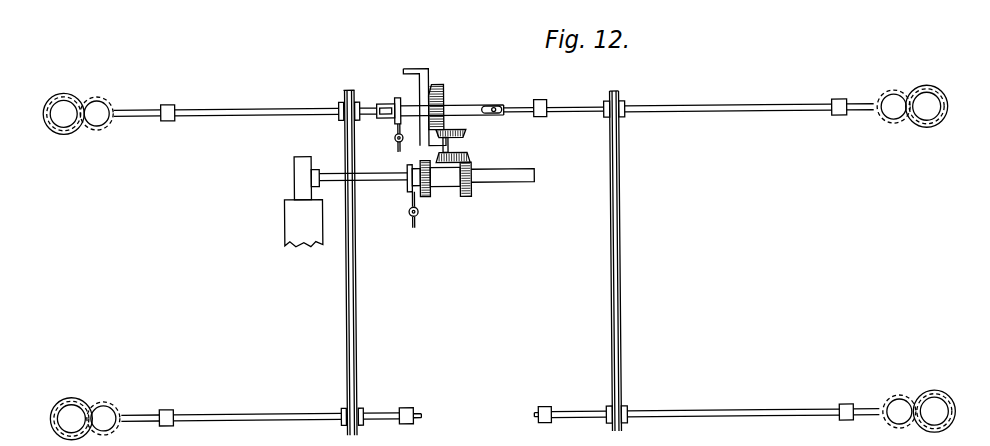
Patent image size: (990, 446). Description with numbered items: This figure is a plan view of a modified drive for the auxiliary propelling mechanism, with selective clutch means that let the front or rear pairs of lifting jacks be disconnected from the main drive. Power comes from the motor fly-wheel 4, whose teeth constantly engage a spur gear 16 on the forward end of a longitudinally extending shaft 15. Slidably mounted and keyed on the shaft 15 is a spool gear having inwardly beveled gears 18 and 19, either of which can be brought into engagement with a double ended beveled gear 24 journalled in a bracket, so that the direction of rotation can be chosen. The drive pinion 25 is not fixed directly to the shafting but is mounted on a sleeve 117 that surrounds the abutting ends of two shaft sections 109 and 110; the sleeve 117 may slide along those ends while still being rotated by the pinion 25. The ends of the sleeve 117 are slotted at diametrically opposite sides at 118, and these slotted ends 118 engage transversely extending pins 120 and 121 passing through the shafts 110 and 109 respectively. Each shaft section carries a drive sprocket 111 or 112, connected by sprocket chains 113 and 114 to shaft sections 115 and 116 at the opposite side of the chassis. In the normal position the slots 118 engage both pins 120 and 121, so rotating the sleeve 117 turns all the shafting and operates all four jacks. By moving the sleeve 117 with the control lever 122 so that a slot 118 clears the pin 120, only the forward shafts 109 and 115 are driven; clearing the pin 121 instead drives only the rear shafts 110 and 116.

The fly-wheel 4 is at (290, 215).
The longitudinally extending shaft 15 is at (527, 180).
The spur gear 16 is at (300, 174).
The inwardly beveled gear 18 is at (428, 193).
The inwardly beveled gear 19 is at (471, 187).
The double ended beveled gear 24 is at (462, 141).
The drive pinion 25 is at (442, 95).
The shaft section 109 is at (228, 100).
The shaft section 110 is at (766, 104).
The drive sprocket 111 is at (345, 94).
The drive sprocket 112 is at (620, 96).
The sprocket chain 113 is at (357, 334).
The sprocket chain 114 is at (621, 304).
The shaft section 115 is at (251, 411).
The shaft section 116 is at (800, 403).
The sleeve 117 is at (468, 105).
The slotted ends 118 is at (388, 102).
The transversely extending pin 120 is at (508, 102).
The transversely extending pin 121 is at (380, 117).
The control lever 122 is at (397, 145).